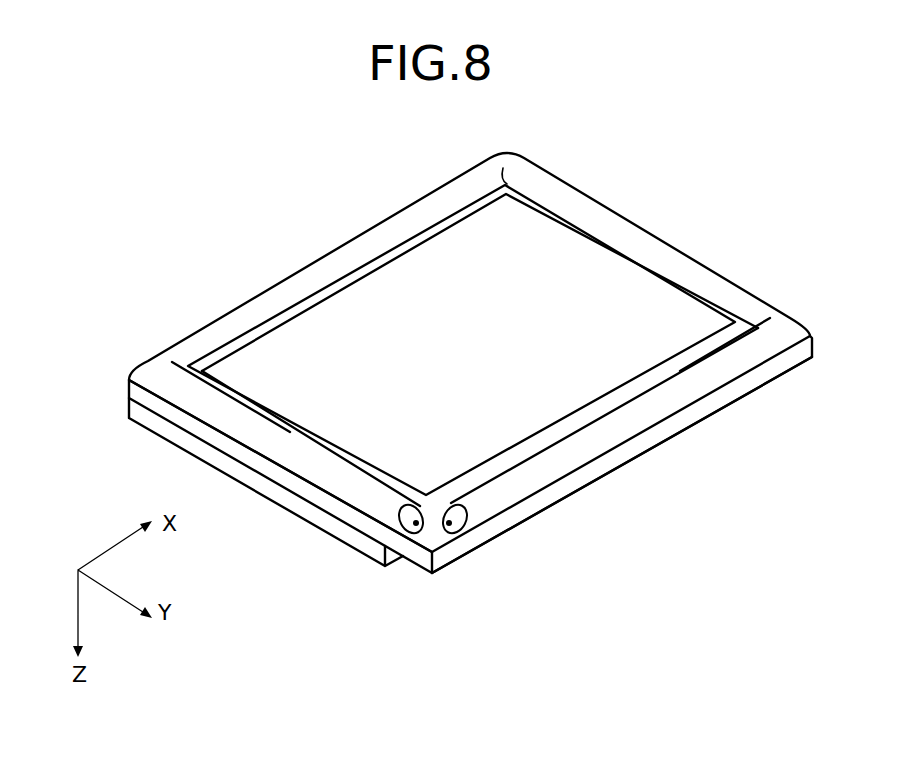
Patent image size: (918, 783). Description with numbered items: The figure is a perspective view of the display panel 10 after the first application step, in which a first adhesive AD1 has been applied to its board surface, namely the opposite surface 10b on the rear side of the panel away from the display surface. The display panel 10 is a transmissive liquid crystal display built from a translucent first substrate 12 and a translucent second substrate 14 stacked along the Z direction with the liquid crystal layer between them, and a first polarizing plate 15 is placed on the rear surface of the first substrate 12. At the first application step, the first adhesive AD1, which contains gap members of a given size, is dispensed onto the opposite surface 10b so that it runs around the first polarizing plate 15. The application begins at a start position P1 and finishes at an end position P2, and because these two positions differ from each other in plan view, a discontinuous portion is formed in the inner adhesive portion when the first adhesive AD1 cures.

The display panel 10 is at (434, 382).
The opposite surface 10b is at (540, 437).
The first substrate 12 is at (129, 380).
The second substrate 14 is at (129, 408).
The first polarizing plate 15 is at (697, 300).
The first adhesive AD1 is at (553, 192).
The start position P1 is at (416, 523).
The end position P2 is at (449, 523).